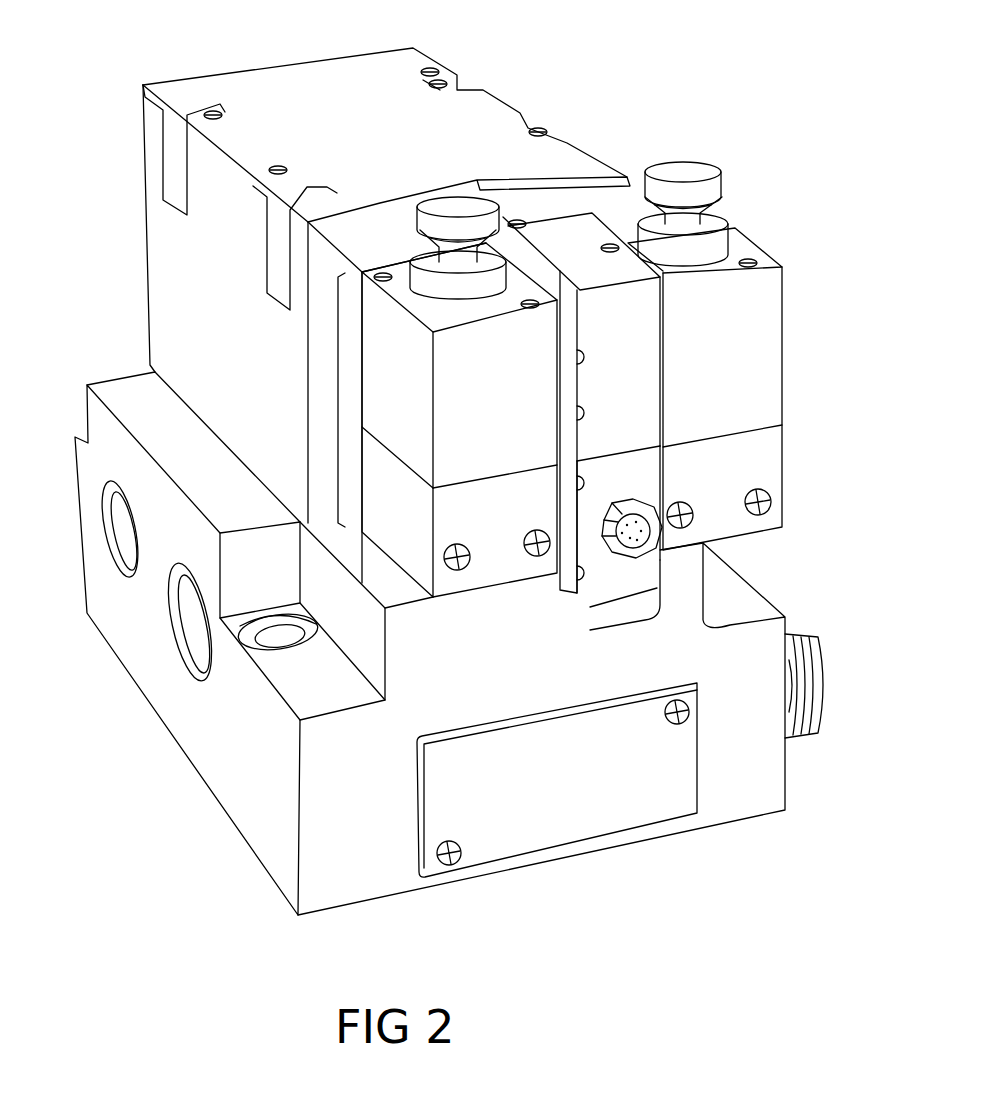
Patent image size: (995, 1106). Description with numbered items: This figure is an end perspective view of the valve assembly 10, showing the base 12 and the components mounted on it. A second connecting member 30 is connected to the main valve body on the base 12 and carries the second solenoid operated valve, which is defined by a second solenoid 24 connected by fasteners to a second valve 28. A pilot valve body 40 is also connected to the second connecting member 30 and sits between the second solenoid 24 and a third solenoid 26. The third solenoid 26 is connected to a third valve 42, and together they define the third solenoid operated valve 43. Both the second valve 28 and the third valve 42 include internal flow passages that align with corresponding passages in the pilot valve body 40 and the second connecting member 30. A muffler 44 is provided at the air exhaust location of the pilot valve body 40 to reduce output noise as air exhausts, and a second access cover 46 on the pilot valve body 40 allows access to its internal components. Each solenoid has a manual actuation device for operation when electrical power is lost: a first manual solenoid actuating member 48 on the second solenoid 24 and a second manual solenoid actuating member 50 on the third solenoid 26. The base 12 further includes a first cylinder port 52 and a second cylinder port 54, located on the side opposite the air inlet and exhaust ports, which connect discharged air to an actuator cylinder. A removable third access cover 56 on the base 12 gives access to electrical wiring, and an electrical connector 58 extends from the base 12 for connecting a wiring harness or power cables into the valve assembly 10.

The valve assembly 10 is at (618, 72).
The base 12 is at (345, 868).
The second solenoid 24 is at (770, 306).
The third solenoid 26 is at (417, 443).
The second valve 28 is at (758, 463).
The second connecting member 30 is at (365, 247).
The pilot valve body 40 is at (643, 578).
The third valve 42 is at (425, 572).
The third solenoid operated valve 43 is at (338, 398).
The muffler 44 is at (648, 545).
The second access cover 46 is at (560, 232).
The first manual solenoid actuating member 48 is at (693, 173).
The second manual solenoid actuating member 50 is at (482, 205).
The first cylinder port 52 is at (120, 562).
The second cylinder port 54 is at (188, 650).
The third access cover 56 is at (536, 808).
The electrical connector 58 is at (813, 738).